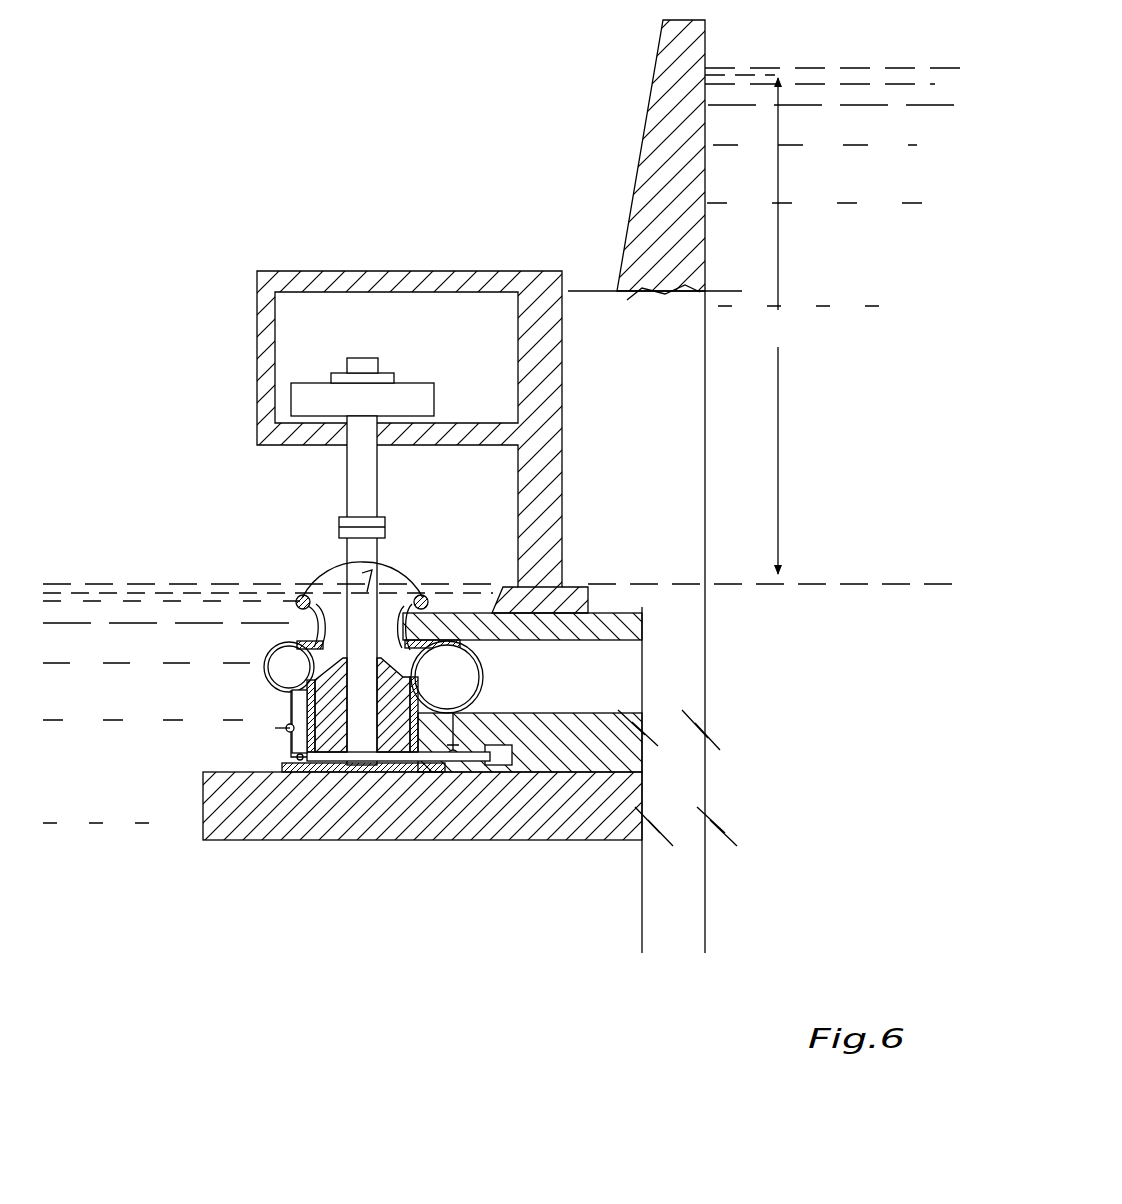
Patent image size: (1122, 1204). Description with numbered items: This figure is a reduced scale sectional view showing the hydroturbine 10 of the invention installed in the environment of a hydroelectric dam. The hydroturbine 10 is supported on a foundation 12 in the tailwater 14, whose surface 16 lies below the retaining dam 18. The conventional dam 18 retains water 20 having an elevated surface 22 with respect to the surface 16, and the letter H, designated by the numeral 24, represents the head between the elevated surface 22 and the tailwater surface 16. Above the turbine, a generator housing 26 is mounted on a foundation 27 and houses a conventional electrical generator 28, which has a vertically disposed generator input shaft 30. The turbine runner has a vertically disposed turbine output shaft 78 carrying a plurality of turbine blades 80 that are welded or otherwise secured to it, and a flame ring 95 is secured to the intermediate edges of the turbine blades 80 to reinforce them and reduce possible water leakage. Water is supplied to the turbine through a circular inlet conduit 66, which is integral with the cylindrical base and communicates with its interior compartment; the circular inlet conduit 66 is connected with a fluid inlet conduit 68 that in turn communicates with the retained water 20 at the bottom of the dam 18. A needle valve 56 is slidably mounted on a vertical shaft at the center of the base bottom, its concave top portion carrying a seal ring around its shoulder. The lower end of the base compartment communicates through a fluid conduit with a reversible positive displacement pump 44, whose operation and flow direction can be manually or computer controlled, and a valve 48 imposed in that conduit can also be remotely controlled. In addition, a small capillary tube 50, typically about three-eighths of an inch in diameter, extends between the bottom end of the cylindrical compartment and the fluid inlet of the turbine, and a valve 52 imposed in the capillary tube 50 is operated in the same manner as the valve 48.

The hydroturbine 10 is at (236, 647).
The foundation 12 is at (208, 797).
The tailwater 14 is at (92, 580).
The surface 16 is at (137, 584).
The retaining dam 18 is at (651, 101).
The water 20 is at (872, 60).
The elevated surface 22 is at (833, 66).
The head 24 is at (789, 340).
The generator housing 26 is at (387, 271).
The foundation 27 is at (628, 613).
The electrical generator 28 is at (410, 388).
The generator input shaft 30 is at (370, 484).
The reversible positive displacement pump 44 is at (502, 745).
The valve 48 is at (478, 682).
The capillary tube 50 is at (290, 703).
The valve 52 is at (275, 728).
The needle valve 56 is at (333, 683).
The circular inlet conduit 66 is at (478, 664).
The fluid inlet conduit 68 is at (623, 672).
The turbine output shaft 78 is at (358, 558).
The turbine blades 80 is at (392, 566).
The flame ring 95 is at (380, 558).